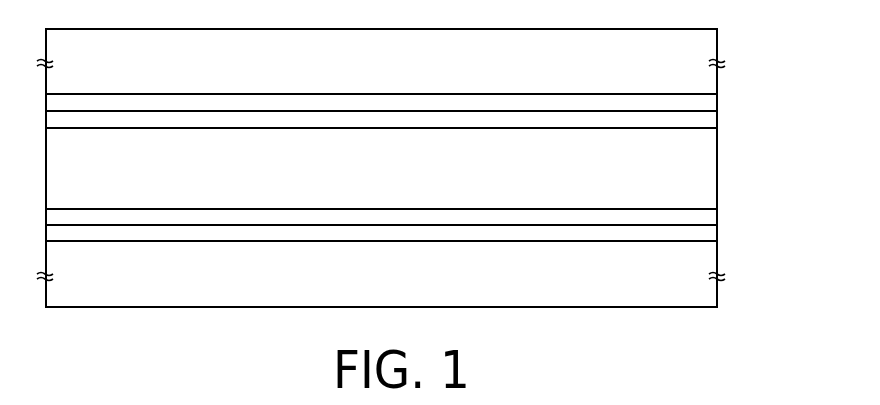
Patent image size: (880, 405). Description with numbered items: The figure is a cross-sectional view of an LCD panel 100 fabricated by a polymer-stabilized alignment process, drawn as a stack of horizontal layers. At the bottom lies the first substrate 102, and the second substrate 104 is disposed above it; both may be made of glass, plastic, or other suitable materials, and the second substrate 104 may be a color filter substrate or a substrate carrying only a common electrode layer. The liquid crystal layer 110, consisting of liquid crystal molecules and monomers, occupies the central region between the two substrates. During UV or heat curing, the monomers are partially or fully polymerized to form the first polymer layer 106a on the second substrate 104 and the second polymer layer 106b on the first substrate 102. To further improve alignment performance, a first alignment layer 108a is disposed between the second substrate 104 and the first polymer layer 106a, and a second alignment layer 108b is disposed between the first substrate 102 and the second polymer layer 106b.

The LCD panel 100 is at (772, 375).
The first substrate 102 is at (692, 294).
The second substrate 104 is at (693, 47).
The first polymer layer 106a is at (692, 117).
The second polymer layer 106b is at (695, 217).
The first alignment layer 108a is at (703, 102).
The second alignment layer 108b is at (700, 233).
The liquid crystal layer 110 is at (698, 172).